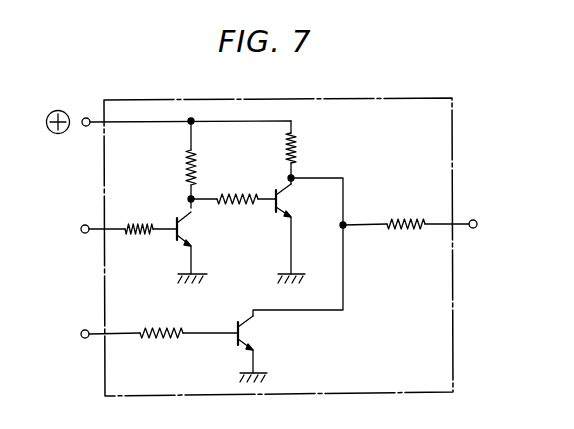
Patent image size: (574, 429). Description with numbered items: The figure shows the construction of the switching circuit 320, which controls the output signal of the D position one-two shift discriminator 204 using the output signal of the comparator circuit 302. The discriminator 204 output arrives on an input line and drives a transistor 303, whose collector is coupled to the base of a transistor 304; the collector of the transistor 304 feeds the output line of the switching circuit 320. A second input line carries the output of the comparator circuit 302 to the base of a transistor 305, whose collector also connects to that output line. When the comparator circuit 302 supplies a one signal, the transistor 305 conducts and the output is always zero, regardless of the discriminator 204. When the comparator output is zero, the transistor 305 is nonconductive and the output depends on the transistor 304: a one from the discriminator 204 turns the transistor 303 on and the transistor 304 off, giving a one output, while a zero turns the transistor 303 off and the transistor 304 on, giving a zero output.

The D position 1-2 shift discriminator 204 is at (97, 232).
The comparator circuit 302 is at (97, 337).
The transistor 303 is at (187, 230).
The transistor 304 is at (290, 197).
The transistor 305 is at (252, 333).
The switching circuit 320 is at (443, 222).